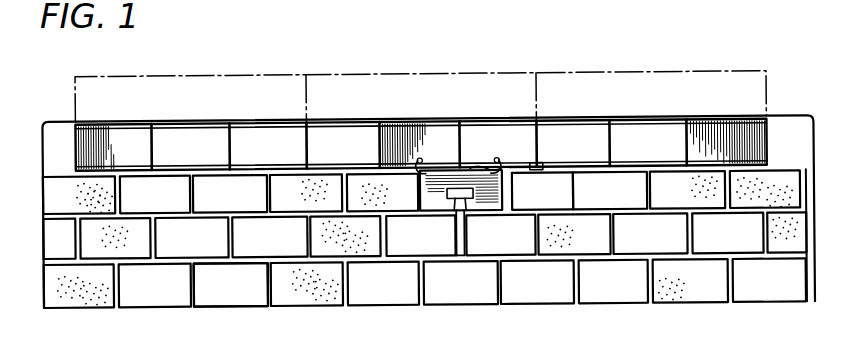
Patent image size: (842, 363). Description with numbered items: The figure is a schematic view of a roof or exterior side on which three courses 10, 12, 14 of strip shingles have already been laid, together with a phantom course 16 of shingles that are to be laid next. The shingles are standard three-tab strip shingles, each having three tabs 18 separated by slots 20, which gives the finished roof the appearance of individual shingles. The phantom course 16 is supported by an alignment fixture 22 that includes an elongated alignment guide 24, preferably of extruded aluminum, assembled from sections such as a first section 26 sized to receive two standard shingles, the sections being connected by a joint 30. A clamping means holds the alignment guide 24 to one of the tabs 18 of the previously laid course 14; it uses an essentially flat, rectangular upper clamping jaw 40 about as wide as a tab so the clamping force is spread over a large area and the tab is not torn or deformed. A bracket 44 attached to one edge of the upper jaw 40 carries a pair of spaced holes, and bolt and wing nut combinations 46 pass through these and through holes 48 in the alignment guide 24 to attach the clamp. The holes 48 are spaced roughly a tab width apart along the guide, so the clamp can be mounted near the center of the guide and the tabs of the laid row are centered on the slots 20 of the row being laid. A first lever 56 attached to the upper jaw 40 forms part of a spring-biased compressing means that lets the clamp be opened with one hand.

The course of shingles 10 is at (160, 300).
The course of shingles 12 is at (202, 253).
The course of shingles 14 is at (232, 207).
The phantom course 16 is at (173, 102).
The tab 18 is at (233, 290).
The slot 20 is at (276, 312).
The alignment fixture 22 is at (490, 106).
The alignment guide 24 is at (253, 143).
The first section 26 is at (352, 155).
The joint 30 is at (543, 167).
The upper clamping jaw 40 is at (434, 196).
The bracket 44 is at (477, 172).
The bolt and wing nut combination 46 is at (413, 188).
The holes 48 is at (132, 154).
The first lever 56 is at (464, 242).